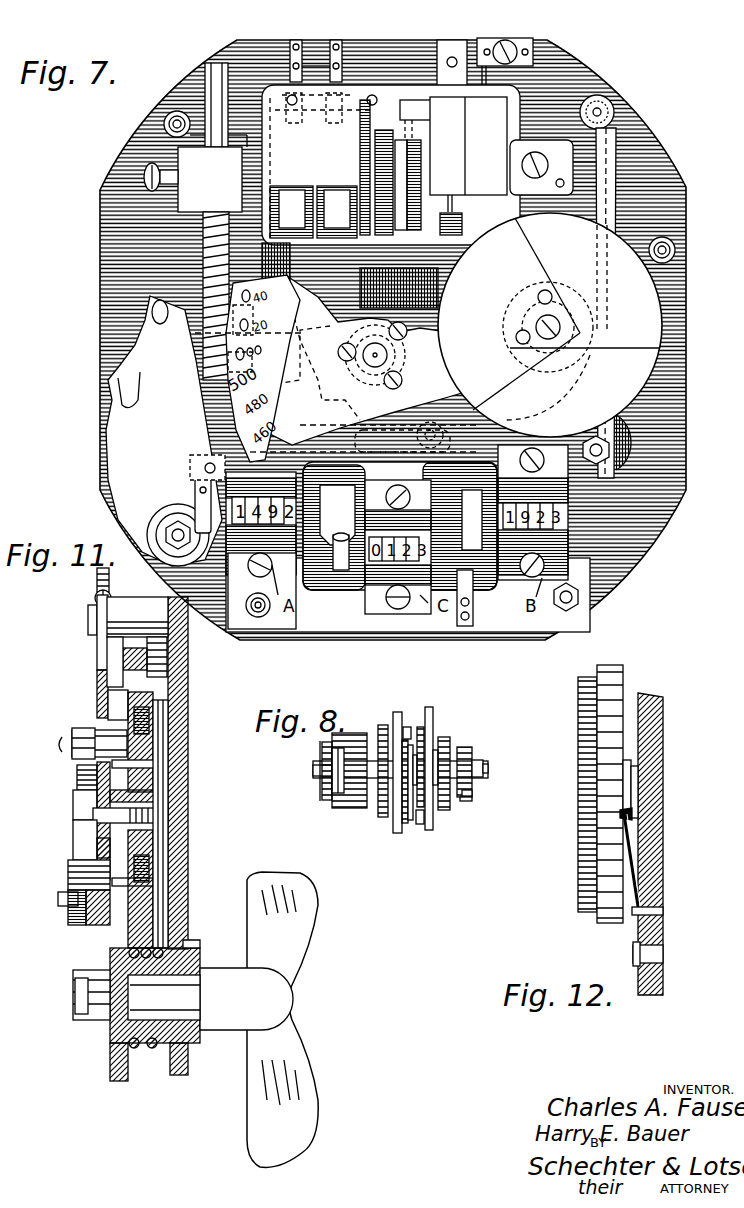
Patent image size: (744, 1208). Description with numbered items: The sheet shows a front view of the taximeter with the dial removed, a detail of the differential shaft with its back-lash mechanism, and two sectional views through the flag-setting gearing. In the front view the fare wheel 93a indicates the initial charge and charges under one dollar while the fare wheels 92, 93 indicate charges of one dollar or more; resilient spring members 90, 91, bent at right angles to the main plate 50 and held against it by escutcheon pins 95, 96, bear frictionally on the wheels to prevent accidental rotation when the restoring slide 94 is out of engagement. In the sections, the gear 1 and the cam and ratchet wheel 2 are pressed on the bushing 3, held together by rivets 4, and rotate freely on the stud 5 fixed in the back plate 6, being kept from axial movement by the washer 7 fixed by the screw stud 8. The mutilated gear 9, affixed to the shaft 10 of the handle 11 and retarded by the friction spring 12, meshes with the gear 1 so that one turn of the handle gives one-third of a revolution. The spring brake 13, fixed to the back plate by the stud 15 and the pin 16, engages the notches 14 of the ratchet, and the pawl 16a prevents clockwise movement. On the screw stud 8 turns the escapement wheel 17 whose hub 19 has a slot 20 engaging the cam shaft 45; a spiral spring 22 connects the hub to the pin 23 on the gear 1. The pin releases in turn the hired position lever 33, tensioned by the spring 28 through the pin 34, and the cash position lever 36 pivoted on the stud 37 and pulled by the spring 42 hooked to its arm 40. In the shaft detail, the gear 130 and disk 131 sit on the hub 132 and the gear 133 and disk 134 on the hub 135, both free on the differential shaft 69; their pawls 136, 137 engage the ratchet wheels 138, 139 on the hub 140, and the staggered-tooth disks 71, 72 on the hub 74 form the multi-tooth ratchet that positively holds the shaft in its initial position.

In FIG. 7, the main plate 50 is at (246, 52).
In FIG. 7, the escutcheon pin 95 is at (300, 45).
In FIG. 7, the resilient spring member 90 is at (302, 60).
In FIG. 7, the resilient spring member 91 is at (350, 62).
In FIG. 7, the escutcheon pin 96 is at (290, 66).
In FIG. 7, the fare wheel 92 is at (290, 232).
In FIG. 7, the fare wheel 93 is at (335, 232).
In FIG. 7, the fare wheel 93a is at (440, 225).
In FIG. 7, the restoring slide 94 is at (312, 280).
In FIG. 7, the cam shaft 45 is at (542, 300).
In FIG. 11, the arm 40 is at (108, 574).
In FIG. 11, the pawl 16a is at (138, 640).
In FIG. 11, the spring 42 is at (96, 591).
In FIG. 11, the stud 37 is at (90, 622).
In FIG. 11, the cash position lever 36 is at (97, 658).
In FIG. 11, the gear 1 is at (115, 705).
In FIG. 12, the gear 1 is at (580, 749).
In FIG. 11, the pin 23 is at (80, 733).
In FIG. 11, the cam and ratchet wheel 2 is at (142, 745).
In FIG. 12, the cam and ratchet wheel 2 is at (616, 668).
In FIG. 11, the rivets 4 is at (150, 764).
In FIG. 11, the spiral spring 22 is at (78, 770).
In FIG. 11, the bushing 3 is at (157, 794).
In FIG. 12, the bushing 3 is at (630, 762).
In FIG. 11, the hub 19 is at (77, 795).
In FIG. 11, the stud 5 is at (172, 815).
In FIG. 12, the stud 5 is at (636, 787).
In FIG. 11, the screw stud 8 is at (95, 818).
In FIG. 11, the slot 20 is at (80, 853).
In FIG. 11, the washer 7 is at (97, 855).
In FIG. 11, the escapement wheel 17 is at (80, 876).
In FIG. 11, the back plate 6 is at (188, 895).
In FIG. 12, the back plate 6 is at (662, 713).
In FIG. 11, the spring 28 is at (62, 905).
In FIG. 11, the pin 34 is at (78, 915).
In FIG. 11, the hired position lever 33 is at (100, 915).
In FIG. 11, the shaft 10 is at (186, 985).
In FIG. 11, the handle 11 is at (300, 922).
In FIG. 11, the mutilated gear 9 is at (112, 1045).
In FIG. 11, the friction spring 12 is at (152, 1050).
In FIG. 8, the gear 133 is at (382, 725).
In FIG. 8, the disk 134 is at (398, 712).
In FIG. 8, the hub 135 is at (396, 805).
In FIG. 8, the pawl 137 is at (408, 727).
In FIG. 8, the ratchet wheel 139 is at (405, 826).
In FIG. 8, the hub 140 is at (414, 800).
In FIG. 8, the disk 131 is at (432, 715).
In FIG. 8, the ratchet wheel 138 is at (430, 710).
In FIG. 8, the hub 132 is at (440, 760).
In FIG. 8, the gear 130 is at (447, 745).
In FIG. 8, the hub 74 is at (476, 760).
In FIG. 8, the differential shaft 69 is at (487, 768).
In FIG. 8, the disk 71 is at (468, 794).
In FIG. 8, the disk 72 is at (465, 800).
In FIG. 8, the pawl 136 is at (440, 818).
In FIG. 12, the notches 14 is at (626, 815).
In FIG. 12, the spring brake 13 is at (642, 846).
In FIG. 12, the pin 16 is at (655, 910).
In FIG. 12, the stud 15 is at (636, 954).